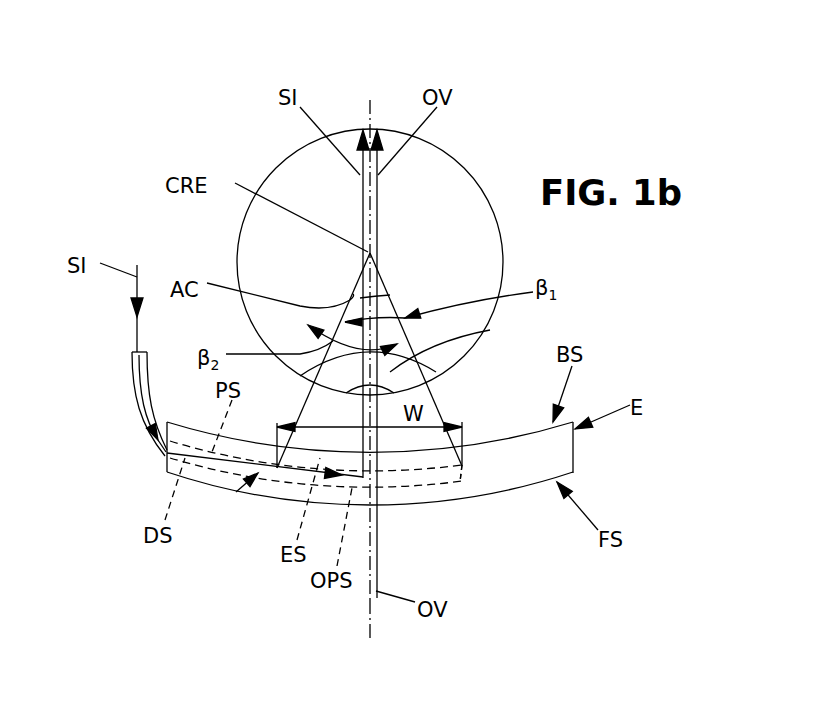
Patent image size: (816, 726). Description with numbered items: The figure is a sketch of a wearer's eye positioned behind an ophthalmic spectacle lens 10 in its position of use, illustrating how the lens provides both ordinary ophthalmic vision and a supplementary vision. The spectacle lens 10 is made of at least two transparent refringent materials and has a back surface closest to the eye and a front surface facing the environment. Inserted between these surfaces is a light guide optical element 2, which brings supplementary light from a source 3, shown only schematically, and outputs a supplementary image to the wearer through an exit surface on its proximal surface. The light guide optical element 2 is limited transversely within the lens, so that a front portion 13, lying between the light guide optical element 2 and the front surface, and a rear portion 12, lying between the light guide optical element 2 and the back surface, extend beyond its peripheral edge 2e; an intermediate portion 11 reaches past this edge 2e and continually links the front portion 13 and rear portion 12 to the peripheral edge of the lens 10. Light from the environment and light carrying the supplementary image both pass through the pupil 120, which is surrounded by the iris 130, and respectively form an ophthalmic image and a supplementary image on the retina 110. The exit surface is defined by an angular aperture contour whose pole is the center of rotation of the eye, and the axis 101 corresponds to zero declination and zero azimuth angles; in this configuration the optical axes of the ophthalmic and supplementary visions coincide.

The retina 110 is at (365, 130).
The pupil 120 is at (436, 372).
The iris 130 is at (490, 330).
The axis where α=β=0 101 is at (368, 620).
The source 3 is at (132, 371).
The light guide optical element 2 is at (243, 487).
The peripheral edge of the light guide optical element 2e is at (463, 468).
The spectacle lens 10 is at (521, 489).
The intermediate portion 11 is at (478, 472).
The rear portion 12 is at (427, 460).
The front portion 13 is at (408, 493).